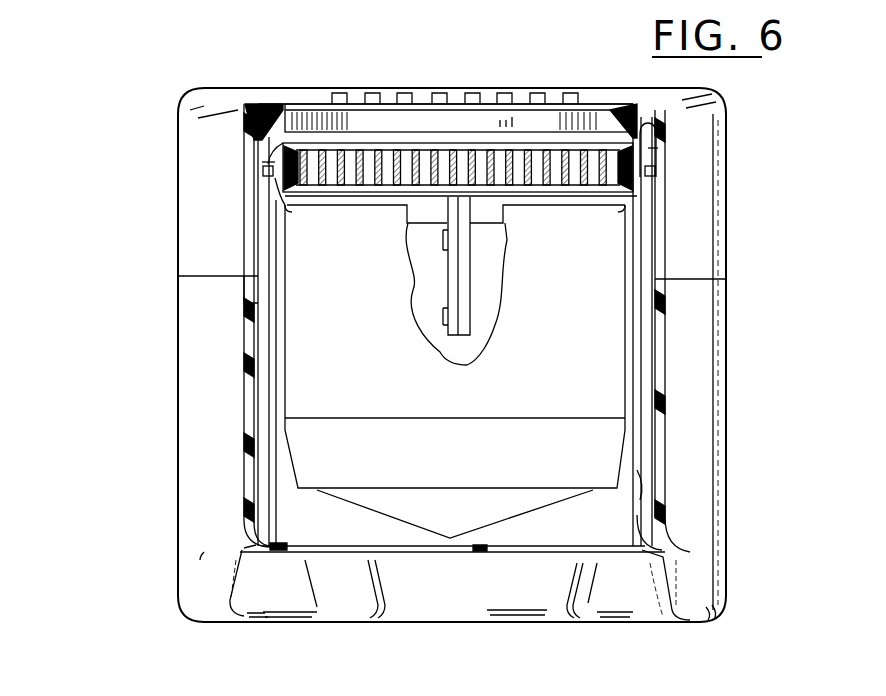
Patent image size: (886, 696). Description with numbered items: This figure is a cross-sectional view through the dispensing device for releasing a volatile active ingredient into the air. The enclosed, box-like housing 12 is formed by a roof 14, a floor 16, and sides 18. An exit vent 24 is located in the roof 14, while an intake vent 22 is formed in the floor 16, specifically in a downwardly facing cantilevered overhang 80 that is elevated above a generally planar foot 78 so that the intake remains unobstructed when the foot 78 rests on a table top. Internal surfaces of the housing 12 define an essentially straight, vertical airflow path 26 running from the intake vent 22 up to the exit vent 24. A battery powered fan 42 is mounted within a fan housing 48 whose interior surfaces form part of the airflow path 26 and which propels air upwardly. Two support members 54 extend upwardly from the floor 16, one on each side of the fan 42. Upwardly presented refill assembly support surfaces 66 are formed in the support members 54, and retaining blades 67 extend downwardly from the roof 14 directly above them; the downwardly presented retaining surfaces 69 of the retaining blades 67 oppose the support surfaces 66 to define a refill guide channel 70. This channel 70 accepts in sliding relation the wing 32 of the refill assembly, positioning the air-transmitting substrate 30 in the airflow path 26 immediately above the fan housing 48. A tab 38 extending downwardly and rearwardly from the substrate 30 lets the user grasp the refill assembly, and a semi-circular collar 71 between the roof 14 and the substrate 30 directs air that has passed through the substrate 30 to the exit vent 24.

The housing 12 is at (720, 605).
The roof 14 is at (618, 88).
The floor 16 is at (238, 622).
The sides 18 is at (178, 518).
The intake vent 22 is at (343, 547).
The exit vent 24 is at (338, 98).
The airflow path 26 is at (647, 483).
The substrate 30 is at (409, 168).
The wing 32 is at (263, 174).
The tab 38 is at (468, 242).
The fan 42 is at (607, 302).
The fan housing 48 is at (607, 262).
The support members 54 is at (265, 405).
The refill assembly support surfaces 66 is at (272, 188).
The retaining blades 67 is at (263, 166).
The retaining surfaces 69 is at (285, 210).
The refill guide channel 70 is at (263, 160).
The semi-circular collar 71 is at (480, 123).
The foot 78 is at (620, 627).
The cantilevered overhang 80 is at (632, 550).